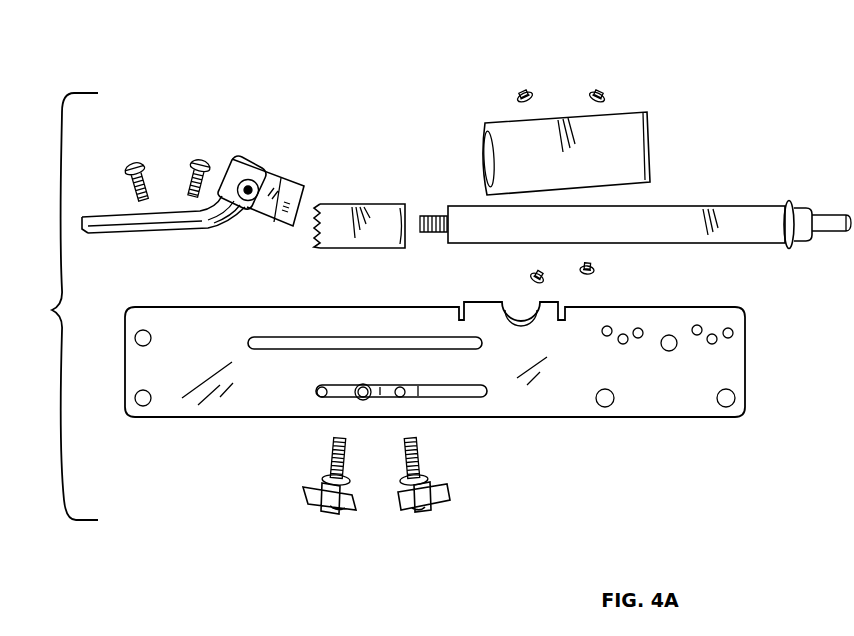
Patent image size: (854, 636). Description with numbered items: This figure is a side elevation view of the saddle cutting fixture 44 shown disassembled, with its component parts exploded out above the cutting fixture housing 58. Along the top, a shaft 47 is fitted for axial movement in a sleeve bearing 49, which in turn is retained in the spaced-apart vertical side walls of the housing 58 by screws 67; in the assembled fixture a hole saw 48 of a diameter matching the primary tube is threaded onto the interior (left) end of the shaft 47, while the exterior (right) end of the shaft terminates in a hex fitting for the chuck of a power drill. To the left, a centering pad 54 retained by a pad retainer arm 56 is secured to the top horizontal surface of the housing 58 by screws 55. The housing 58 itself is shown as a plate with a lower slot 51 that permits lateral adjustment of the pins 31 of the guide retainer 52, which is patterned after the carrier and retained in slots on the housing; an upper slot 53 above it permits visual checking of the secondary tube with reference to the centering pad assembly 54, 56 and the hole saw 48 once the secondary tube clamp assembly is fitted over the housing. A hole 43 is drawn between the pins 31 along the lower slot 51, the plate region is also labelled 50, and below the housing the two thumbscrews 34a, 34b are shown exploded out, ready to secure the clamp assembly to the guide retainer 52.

The saddle cutting fixture 44 is at (59, 306).
The screws 55 is at (196, 160).
The pad retainer arm 56 is at (245, 165).
The centering pad 54 is at (278, 187).
The hole saw 48 is at (343, 207).
The shaft 47 is at (754, 210).
The sleeve bearing 49 is at (640, 98).
The screws 67 is at (592, 90).
The plate 50 is at (362, 320).
The cutting fixture housing 58 is at (672, 398).
The slot 53 is at (256, 338).
The lower slot 51 is at (482, 388).
The pins 31 is at (318, 396).
The hole 43 is at (363, 386).
The guide retainer 52 is at (382, 390).
The thumb screw 34a is at (302, 494).
The thumb screw 34b is at (445, 502).